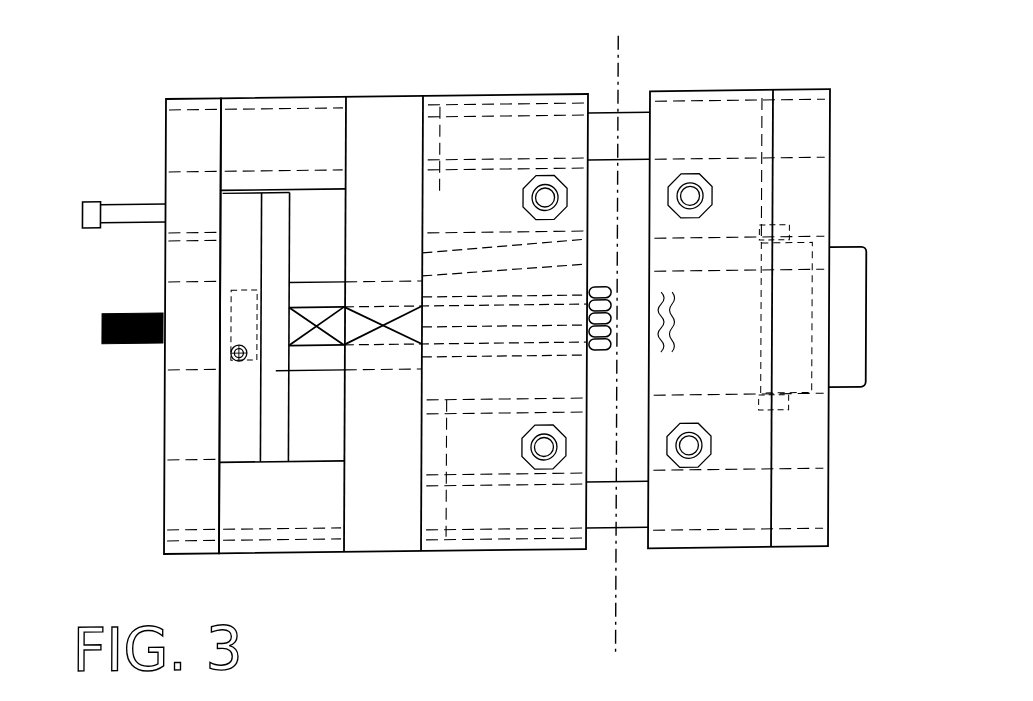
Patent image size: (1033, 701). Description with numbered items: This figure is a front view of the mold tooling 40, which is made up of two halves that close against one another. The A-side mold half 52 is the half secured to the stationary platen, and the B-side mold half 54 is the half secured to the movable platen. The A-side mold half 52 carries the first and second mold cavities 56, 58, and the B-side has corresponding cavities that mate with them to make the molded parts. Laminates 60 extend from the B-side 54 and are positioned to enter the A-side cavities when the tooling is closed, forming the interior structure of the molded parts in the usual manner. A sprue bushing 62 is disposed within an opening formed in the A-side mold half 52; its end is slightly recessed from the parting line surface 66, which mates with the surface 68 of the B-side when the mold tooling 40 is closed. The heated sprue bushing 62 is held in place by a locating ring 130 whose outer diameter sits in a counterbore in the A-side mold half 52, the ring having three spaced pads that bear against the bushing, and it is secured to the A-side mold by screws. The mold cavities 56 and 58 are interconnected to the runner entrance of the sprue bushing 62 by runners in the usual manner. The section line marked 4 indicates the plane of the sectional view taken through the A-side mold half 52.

The section line 4- 4 is at (618, 41).
The mold tooling 40 is at (511, 50).
The A-side mold half 52 is at (738, 82).
The B-side mold half 54 is at (257, 88).
The first mold cavity 56 is at (586, 290).
The second mold cavity 58 is at (662, 332).
The laminates 60 is at (612, 357).
The sprue bushing 62 is at (790, 296).
The parting line surface 66 is at (645, 552).
The surface of the B-side 68 is at (590, 552).
The locating ring 130 is at (845, 371).